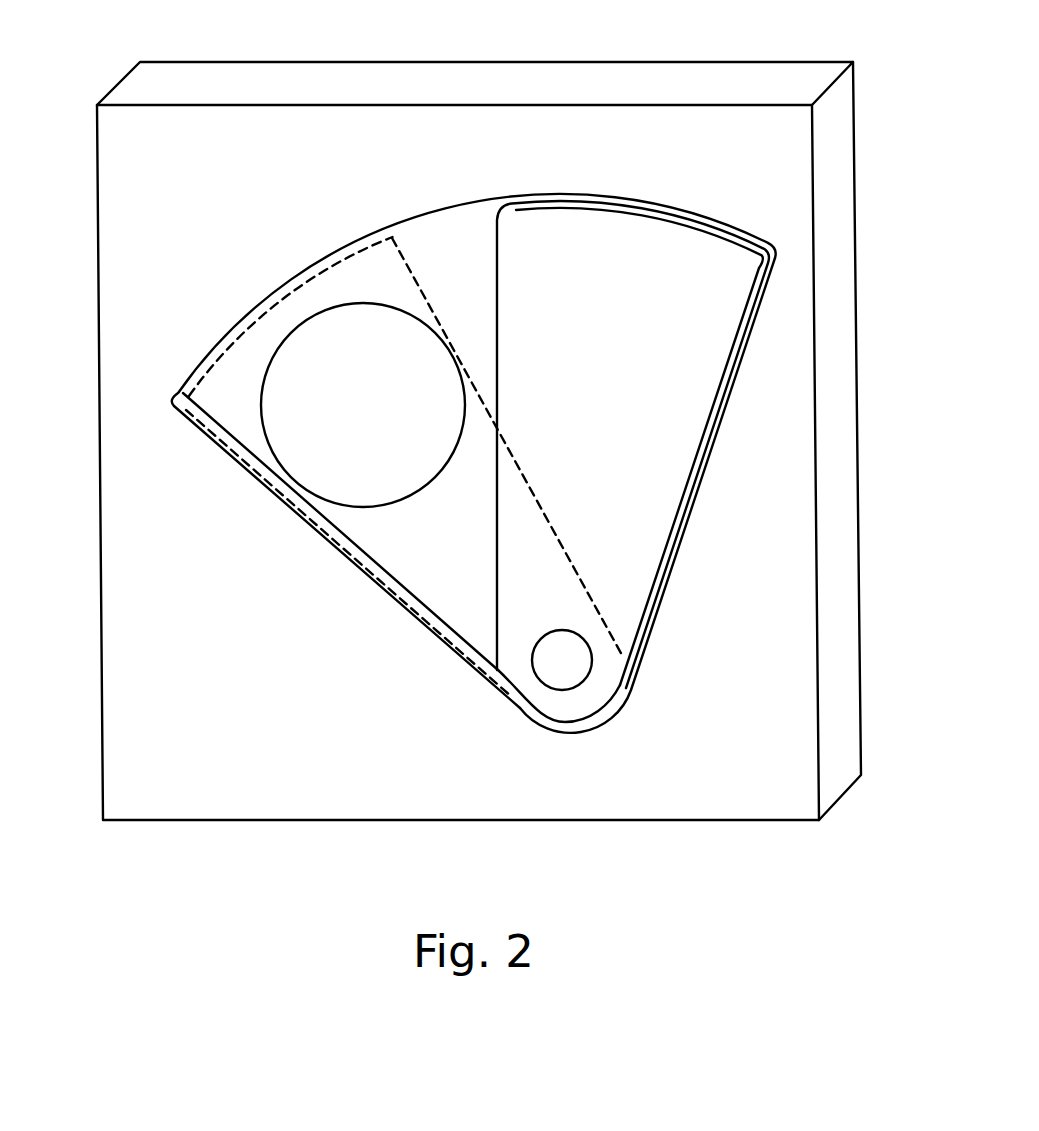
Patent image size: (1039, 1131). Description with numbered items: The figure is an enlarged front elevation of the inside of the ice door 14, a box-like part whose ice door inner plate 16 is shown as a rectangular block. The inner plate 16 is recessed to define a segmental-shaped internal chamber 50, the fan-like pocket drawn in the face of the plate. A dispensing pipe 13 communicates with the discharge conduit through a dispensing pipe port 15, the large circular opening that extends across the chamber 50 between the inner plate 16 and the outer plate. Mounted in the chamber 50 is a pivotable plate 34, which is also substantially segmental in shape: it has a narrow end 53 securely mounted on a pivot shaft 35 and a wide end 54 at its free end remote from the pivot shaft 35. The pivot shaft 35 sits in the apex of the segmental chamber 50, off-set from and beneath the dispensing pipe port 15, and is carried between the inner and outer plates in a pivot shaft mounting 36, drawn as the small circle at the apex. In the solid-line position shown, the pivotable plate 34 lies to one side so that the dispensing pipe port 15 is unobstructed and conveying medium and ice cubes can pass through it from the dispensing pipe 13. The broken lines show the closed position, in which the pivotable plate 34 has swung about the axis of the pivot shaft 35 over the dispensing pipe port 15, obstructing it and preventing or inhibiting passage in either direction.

The dispensing pipe 13 is at (265, 378).
The ice door 14 is at (695, 123).
The dispensing pipe port 15 is at (325, 352).
The ice door inner plate 16 is at (360, 87).
The pivotable plate 34 is at (745, 268).
The pivot shaft 35 is at (593, 657).
The pivot shaft mounting 36 is at (553, 680).
The internal chamber 50 is at (460, 240).
The narrow end 53 is at (585, 723).
The wide end 54 is at (715, 240).